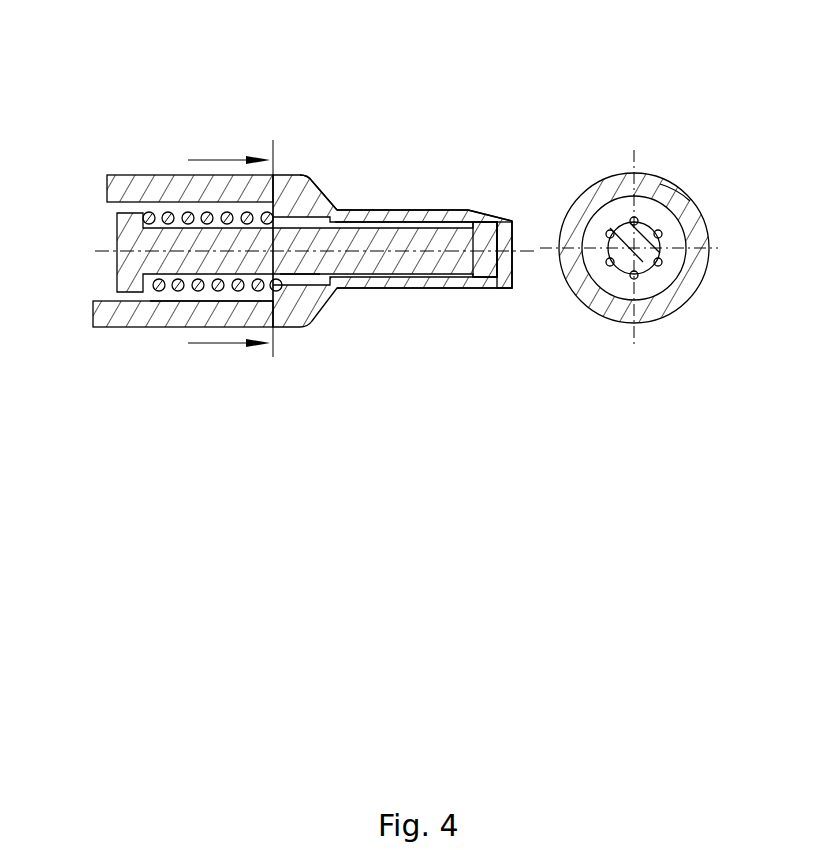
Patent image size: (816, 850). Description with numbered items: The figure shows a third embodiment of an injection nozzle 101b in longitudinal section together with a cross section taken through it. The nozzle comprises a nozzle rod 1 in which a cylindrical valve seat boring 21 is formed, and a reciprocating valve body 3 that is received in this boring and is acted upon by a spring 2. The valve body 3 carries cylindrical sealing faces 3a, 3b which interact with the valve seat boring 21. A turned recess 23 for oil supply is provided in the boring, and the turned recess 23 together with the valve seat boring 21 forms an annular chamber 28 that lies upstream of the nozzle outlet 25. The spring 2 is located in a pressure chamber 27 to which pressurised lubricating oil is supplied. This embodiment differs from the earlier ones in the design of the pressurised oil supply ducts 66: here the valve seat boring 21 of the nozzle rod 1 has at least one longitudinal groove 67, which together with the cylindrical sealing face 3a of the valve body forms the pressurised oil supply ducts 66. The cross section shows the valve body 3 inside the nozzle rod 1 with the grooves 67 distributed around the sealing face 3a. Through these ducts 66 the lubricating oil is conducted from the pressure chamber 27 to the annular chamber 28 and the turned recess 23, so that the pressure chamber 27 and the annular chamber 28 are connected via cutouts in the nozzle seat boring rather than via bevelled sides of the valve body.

The injection nozzle 101b is at (118, 102).
The nozzle rod 1 is at (299, 185).
The spring 2 is at (207, 222).
The valve body 3 is at (157, 235).
The cylindrical sealing face on valve body 3a is at (299, 282).
The cylindrical sealing face on valve body 3b is at (478, 277).
The valve seat boring 21 is at (357, 212).
The turned recess for oil supply 23 is at (395, 225).
The nozzle outlet 25 is at (487, 215).
The pressure chamber 27 is at (213, 297).
The annular chamber 28 is at (353, 275).
The pressurised oil supply ducts 66 is at (315, 218).
The longitudinal groove 67 is at (607, 262).